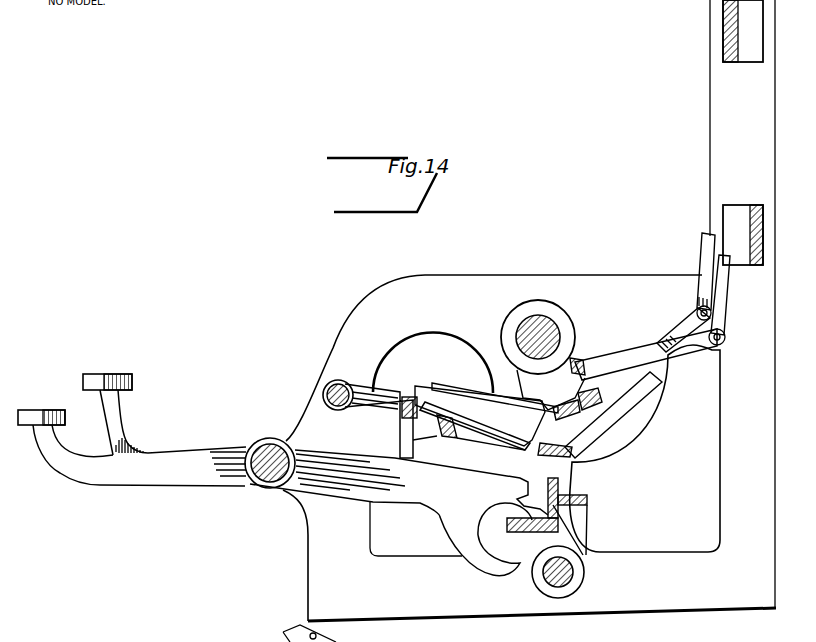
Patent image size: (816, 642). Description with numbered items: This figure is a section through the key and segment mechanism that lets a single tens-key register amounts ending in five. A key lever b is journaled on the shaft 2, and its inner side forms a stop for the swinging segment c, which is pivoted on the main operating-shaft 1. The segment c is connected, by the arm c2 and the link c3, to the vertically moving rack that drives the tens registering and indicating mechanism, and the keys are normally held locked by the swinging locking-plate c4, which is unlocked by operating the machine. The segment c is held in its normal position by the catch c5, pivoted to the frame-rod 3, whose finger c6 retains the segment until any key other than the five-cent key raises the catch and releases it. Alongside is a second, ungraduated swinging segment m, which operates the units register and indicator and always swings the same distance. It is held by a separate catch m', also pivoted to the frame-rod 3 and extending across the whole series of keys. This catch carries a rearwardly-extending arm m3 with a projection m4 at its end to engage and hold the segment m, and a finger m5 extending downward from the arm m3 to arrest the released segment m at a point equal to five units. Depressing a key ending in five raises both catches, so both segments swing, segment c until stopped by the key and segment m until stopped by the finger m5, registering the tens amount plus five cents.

The main operating-shaft 1 is at (553, 327).
The shaft 2 is at (266, 441).
The frame-rod 3 is at (350, 384).
The dollar series key b is at (283, 475).
The swinging segment c is at (604, 425).
The arm c2 is at (661, 346).
The link c3 is at (700, 291).
The swinging locking-plate c4 is at (575, 528).
The catch c5 is at (429, 450).
The finger c6 is at (491, 450).
The swinging segment m is at (559, 389).
The catch m' is at (415, 391).
The rearwardly-extending arm m3 is at (466, 390).
The projection m4 is at (522, 408).
The finger m5 is at (530, 450).